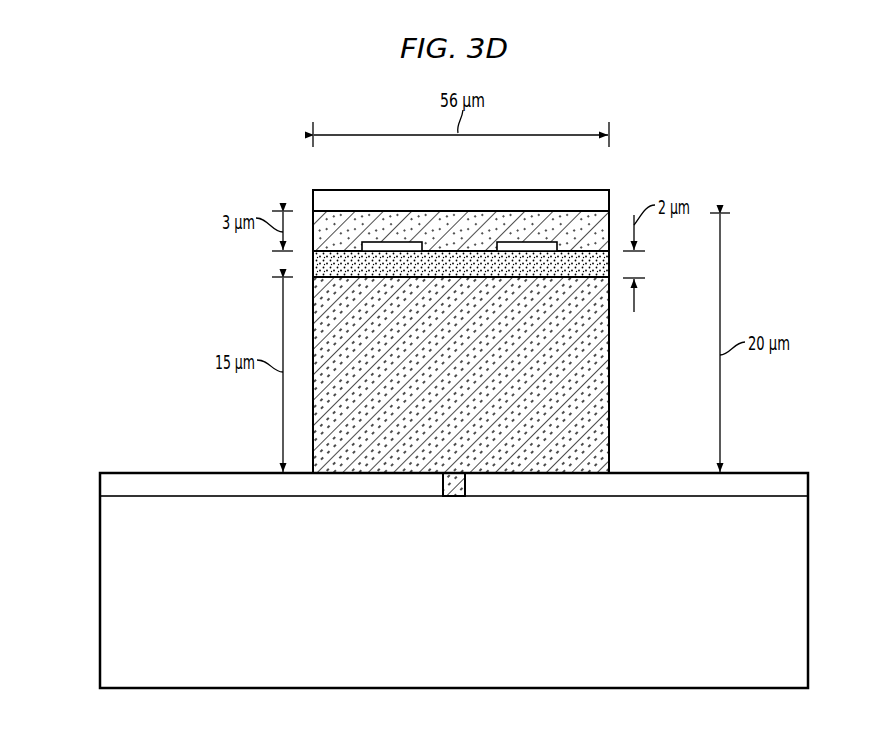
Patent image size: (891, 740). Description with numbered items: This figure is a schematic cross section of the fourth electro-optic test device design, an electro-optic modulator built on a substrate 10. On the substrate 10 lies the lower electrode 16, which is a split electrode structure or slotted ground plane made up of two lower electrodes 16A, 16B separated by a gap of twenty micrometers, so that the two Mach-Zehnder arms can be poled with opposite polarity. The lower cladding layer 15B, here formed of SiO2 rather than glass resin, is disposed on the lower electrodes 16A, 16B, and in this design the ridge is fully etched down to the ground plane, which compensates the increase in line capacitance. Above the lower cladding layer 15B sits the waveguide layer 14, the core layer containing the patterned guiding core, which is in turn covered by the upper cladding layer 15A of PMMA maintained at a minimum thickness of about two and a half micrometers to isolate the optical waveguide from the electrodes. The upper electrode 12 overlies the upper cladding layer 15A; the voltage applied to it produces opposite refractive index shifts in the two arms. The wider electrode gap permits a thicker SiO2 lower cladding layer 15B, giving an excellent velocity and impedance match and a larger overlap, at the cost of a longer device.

The substrate 10 is at (809, 588).
The upper electrode 12 is at (313, 195).
The waveguide layer 14 is at (576, 245).
The upper cladding layer 15A is at (450, 218).
The lower cladding layer 15B is at (611, 428).
The lower electrode 16 is at (478, 497).
The lower electrode 16A is at (809, 488).
The lower electrode 16B is at (100, 485).